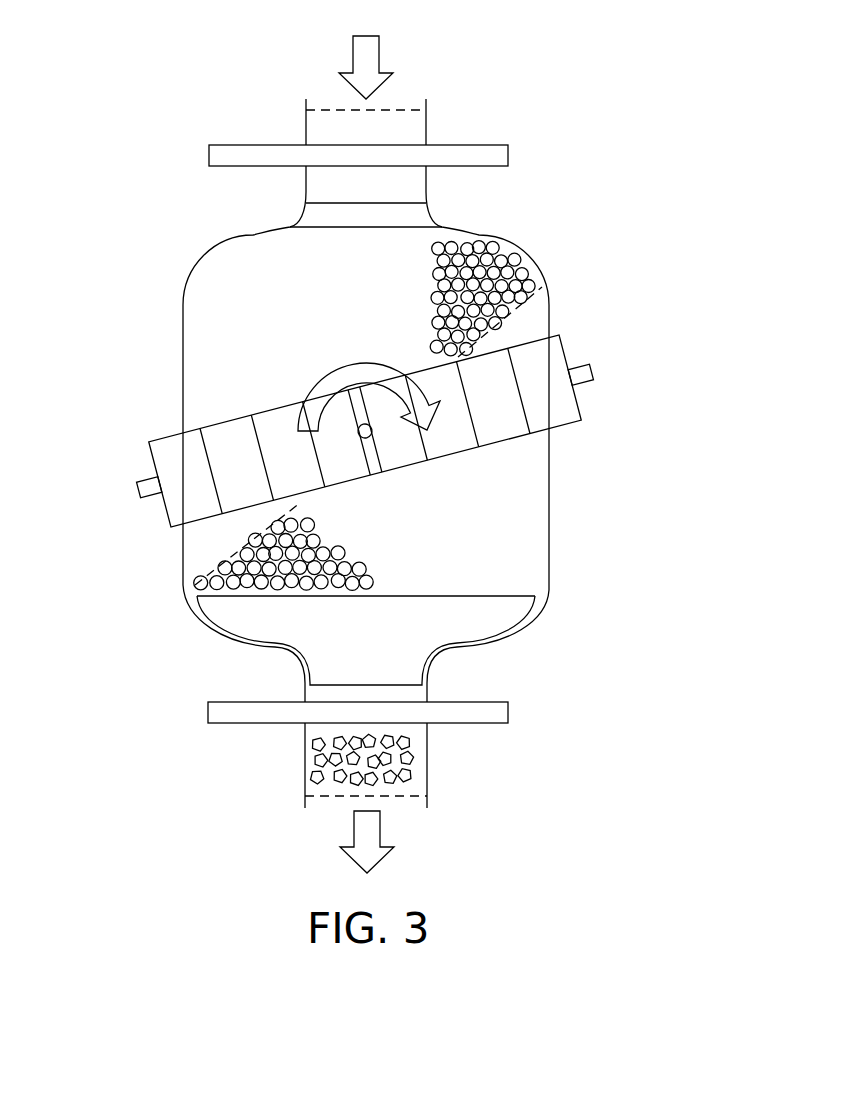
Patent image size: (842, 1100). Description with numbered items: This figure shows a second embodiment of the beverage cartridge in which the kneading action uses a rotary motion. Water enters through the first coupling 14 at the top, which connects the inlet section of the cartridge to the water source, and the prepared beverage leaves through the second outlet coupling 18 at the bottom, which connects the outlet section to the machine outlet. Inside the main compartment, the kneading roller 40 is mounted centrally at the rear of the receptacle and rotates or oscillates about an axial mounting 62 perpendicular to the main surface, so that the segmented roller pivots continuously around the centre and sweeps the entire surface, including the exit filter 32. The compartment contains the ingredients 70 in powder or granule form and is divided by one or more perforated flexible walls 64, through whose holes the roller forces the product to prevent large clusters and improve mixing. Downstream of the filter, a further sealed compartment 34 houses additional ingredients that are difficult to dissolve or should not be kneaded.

The first coupling 14 is at (478, 145).
The second outlet coupling 18 is at (497, 713).
The exit filter 32 is at (240, 617).
The sealed compartment 34 is at (338, 762).
The kneading roller 40 is at (167, 457).
The axial mounting 62 is at (375, 434).
The perforated flexible walls 64 is at (523, 270).
The ingredients 70 is at (243, 550).